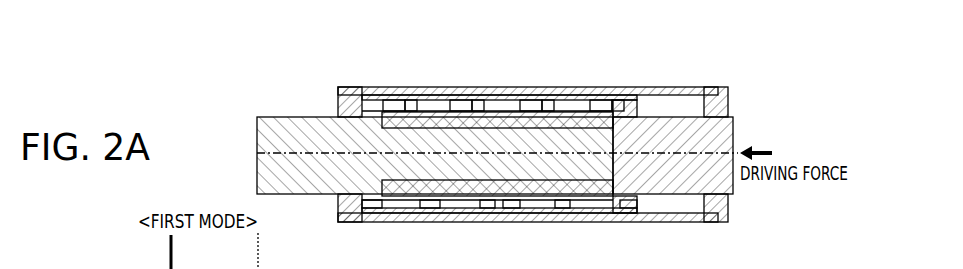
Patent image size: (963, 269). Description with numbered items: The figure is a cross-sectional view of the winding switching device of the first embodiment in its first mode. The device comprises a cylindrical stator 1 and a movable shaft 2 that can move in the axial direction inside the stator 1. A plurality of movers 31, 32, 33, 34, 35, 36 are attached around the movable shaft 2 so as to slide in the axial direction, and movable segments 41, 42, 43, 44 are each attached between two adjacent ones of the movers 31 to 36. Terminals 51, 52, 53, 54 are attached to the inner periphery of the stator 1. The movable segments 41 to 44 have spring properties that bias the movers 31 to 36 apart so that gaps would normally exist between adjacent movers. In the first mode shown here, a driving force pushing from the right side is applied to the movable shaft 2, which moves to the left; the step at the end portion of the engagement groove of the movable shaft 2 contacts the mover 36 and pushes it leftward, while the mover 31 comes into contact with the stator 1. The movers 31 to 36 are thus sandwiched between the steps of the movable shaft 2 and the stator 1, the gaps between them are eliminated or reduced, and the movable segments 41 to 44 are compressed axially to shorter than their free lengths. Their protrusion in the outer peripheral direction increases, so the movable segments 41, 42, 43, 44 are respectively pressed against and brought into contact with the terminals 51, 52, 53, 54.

The stator 1 is at (703, 88).
The movable shaft 2 is at (729, 141).
The mover 31 is at (365, 197).
The mover 32 is at (430, 197).
The mover 33 is at (487, 200).
The mover 34 is at (509, 200).
The mover 35 is at (562, 200).
The mover 36 is at (633, 197).
The movable segment 41 is at (394, 109).
The movable segment 42 is at (462, 109).
The movable segment 43 is at (530, 109).
The movable segment 44 is at (600, 109).
The terminal 51 is at (406, 110).
The terminal 52 is at (476, 110).
The terminal 53 is at (546, 110).
The terminal 54 is at (618, 105).